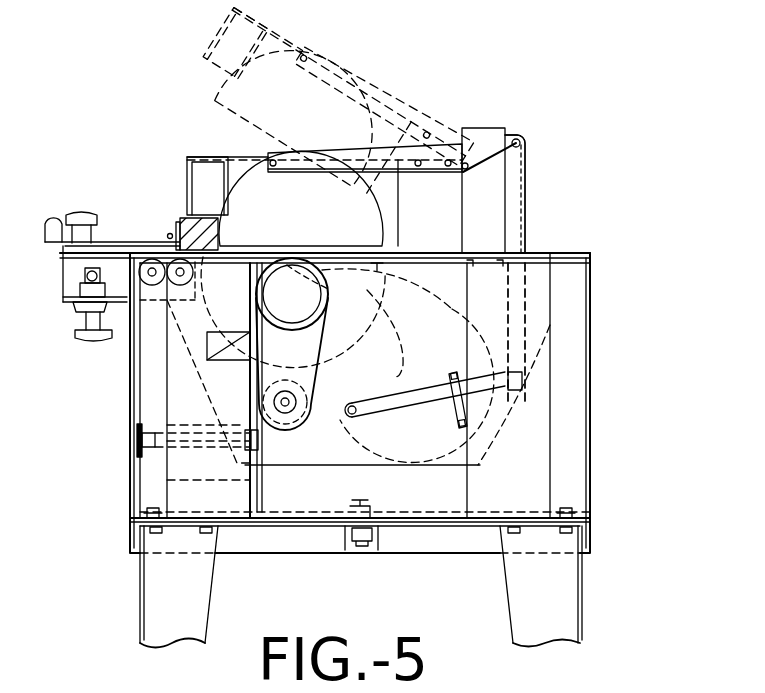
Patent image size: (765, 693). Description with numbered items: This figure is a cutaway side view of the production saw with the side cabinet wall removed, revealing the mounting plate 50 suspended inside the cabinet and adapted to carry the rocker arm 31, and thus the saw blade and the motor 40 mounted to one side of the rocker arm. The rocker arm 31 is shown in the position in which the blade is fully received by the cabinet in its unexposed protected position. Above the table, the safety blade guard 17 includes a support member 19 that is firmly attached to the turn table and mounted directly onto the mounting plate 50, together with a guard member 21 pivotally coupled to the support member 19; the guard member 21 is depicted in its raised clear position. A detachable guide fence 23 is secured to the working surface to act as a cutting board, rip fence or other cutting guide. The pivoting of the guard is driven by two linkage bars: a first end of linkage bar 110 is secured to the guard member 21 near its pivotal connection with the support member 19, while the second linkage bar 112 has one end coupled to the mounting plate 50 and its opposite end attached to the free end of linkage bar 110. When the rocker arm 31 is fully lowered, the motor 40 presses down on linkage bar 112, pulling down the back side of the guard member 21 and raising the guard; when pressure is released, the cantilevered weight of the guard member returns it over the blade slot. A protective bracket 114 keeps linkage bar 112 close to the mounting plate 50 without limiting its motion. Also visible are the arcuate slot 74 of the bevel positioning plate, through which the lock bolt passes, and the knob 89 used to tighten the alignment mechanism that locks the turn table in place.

The safety blade guard 17 is at (488, 90).
The support member 19 is at (495, 212).
The guard member 21 is at (275, 57).
The guide fence 23 is at (176, 230).
The rocker arm 31 is at (377, 262).
The motor 40 is at (283, 302).
The mounting plate 50 is at (543, 287).
The arcuate slot 74 is at (197, 442).
The knob 89 is at (95, 340).
The linkage bar 110 is at (520, 312).
The linkage bar 112 is at (415, 402).
The protective bracket 114 is at (465, 432).